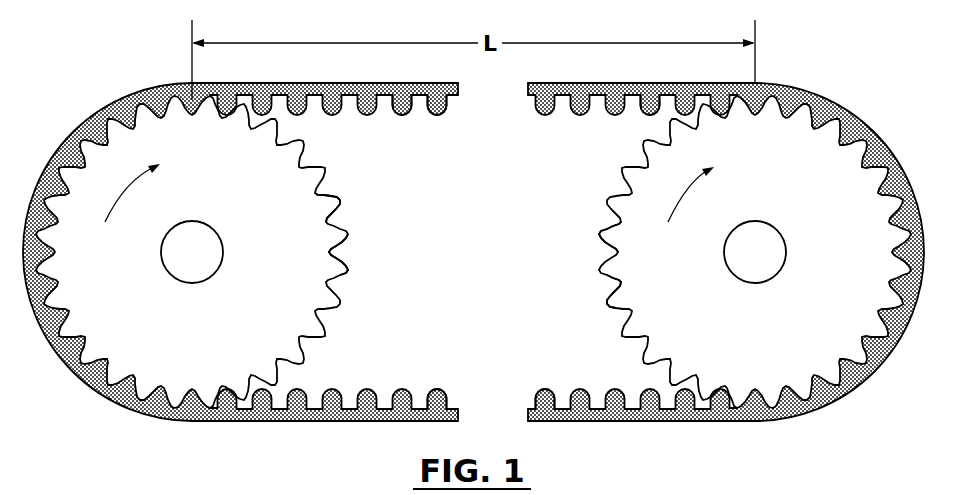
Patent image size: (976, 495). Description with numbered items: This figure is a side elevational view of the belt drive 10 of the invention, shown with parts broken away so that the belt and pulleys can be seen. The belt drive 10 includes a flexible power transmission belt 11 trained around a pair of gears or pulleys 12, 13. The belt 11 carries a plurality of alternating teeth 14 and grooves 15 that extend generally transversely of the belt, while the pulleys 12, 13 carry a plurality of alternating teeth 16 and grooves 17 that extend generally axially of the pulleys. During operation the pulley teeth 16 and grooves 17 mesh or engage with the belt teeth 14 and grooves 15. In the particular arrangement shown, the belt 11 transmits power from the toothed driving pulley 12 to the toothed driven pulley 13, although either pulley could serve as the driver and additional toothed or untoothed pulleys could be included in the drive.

The belt drive 10 is at (105, 86).
The flexible power transmission belt 11 is at (794, 90).
The toothed driving pulley 12 is at (138, 364).
The toothed driven pulley 13 is at (823, 353).
The belt teeth 14 is at (437, 113).
The belt grooves 15 is at (384, 99).
The pulley teeth 16 is at (349, 235).
The pulley grooves 17 is at (320, 316).